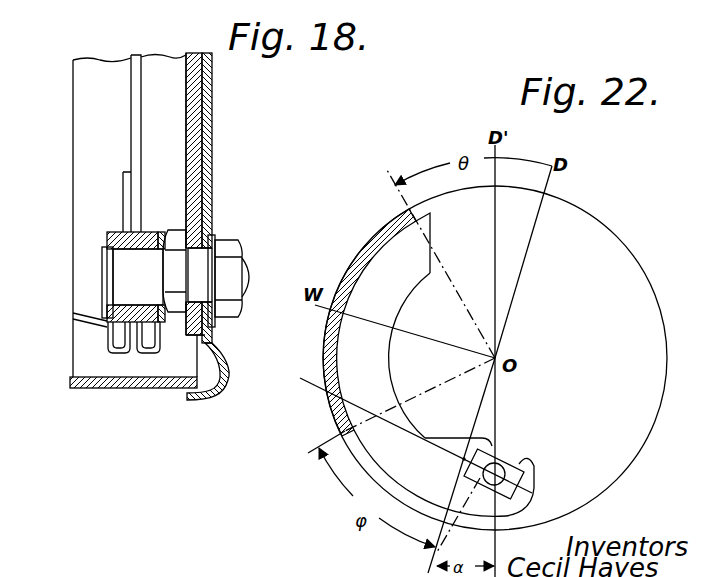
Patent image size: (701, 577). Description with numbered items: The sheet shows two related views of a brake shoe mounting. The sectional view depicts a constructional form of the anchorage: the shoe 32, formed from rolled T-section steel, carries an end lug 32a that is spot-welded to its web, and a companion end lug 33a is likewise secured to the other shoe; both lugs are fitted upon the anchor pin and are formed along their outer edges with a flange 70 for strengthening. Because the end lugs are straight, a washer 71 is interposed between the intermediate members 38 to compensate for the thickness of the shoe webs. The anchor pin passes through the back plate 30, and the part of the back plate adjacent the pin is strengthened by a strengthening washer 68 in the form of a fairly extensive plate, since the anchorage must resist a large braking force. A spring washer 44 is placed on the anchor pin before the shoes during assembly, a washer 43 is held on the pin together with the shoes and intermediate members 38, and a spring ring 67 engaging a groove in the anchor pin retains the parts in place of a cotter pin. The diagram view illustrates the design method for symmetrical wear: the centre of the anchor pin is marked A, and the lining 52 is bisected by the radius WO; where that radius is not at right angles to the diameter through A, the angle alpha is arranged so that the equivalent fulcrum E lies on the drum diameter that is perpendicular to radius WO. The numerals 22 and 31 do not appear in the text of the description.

In FIG. 18, the shoe 32 is at (98, 76).
In FIG. 18, the end lug 32a is at (127, 172).
In FIG. 18, the back plate 30 is at (210, 128).
In FIG. 18, the strengthening washer 68 is at (194, 99).
In FIG. 18, the bolt 22 is at (162, 232).
In FIG. 18, the washer 43 is at (117, 232).
In FIG. 18, the end lug 33a is at (148, 232).
In FIG. 18, the spring ring 67 is at (107, 239).
In FIG. 18, the intermediate members 38 is at (127, 322).
In FIG. 18, the flange 70 is at (118, 355).
In FIG. 18, the washer 71 is at (142, 355).
In FIG. 18, the base plate 31 is at (82, 387).
In FIG. 18, the spring washer 44 is at (216, 351).
In FIG. 22, the lining 52 is at (392, 229).
In FIG. 22, the centre of the anchor pin A is at (503, 463).
In FIG. 22, the equivalent fulcrum E is at (460, 461).